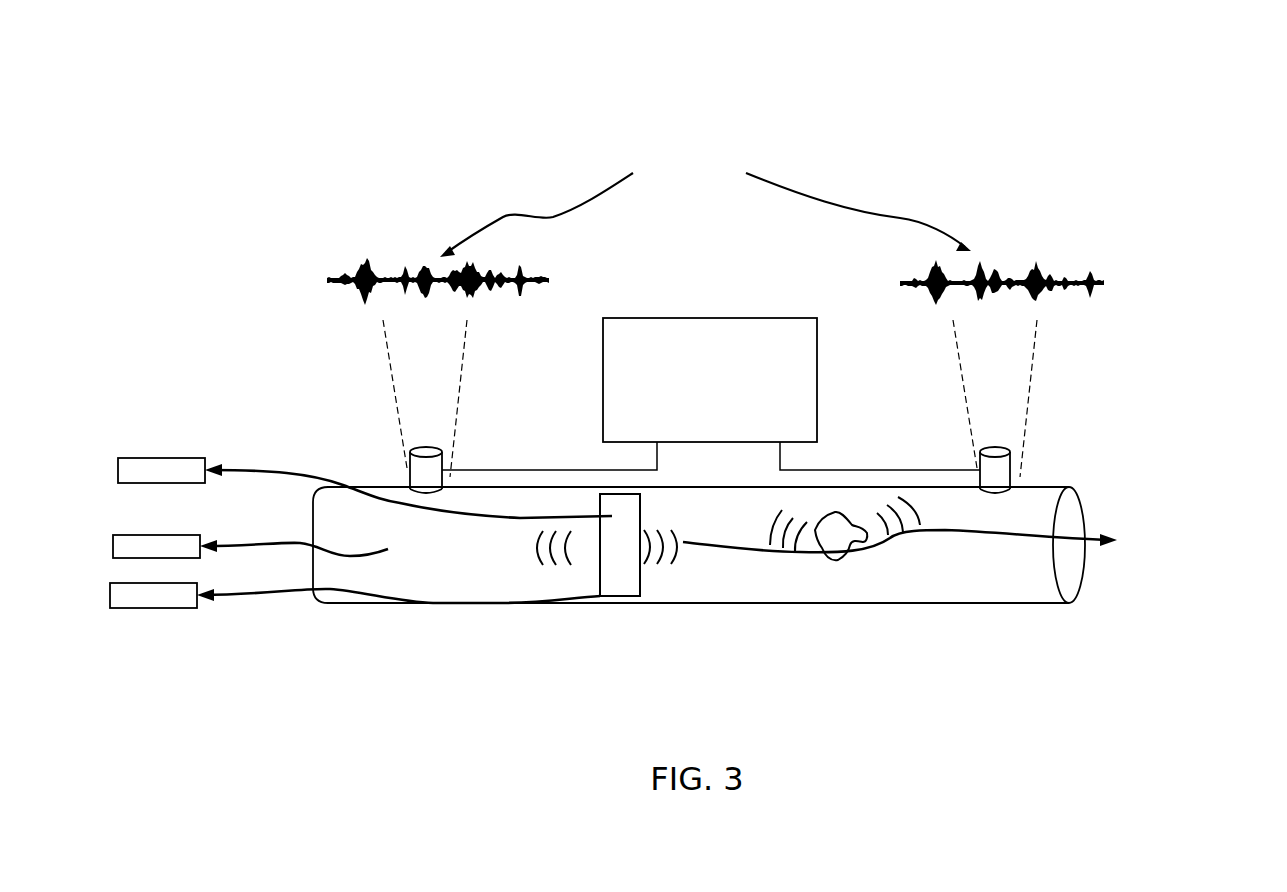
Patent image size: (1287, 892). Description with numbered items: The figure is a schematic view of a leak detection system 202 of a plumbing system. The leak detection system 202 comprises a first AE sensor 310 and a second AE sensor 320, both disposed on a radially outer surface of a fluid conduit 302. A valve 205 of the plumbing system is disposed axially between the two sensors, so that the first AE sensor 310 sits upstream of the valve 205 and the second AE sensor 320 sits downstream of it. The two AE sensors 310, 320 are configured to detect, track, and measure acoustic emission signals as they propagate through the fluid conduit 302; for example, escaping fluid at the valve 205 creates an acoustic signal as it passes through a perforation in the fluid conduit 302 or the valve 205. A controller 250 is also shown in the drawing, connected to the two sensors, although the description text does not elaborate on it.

The leak detection system 202 is at (403, 128).
The valve 205 is at (616, 566).
The controller 250 is at (710, 380).
The fluid conduit 302 is at (672, 604).
The first AE sensor 310 is at (427, 470).
The second AE sensor 320 is at (993, 460).